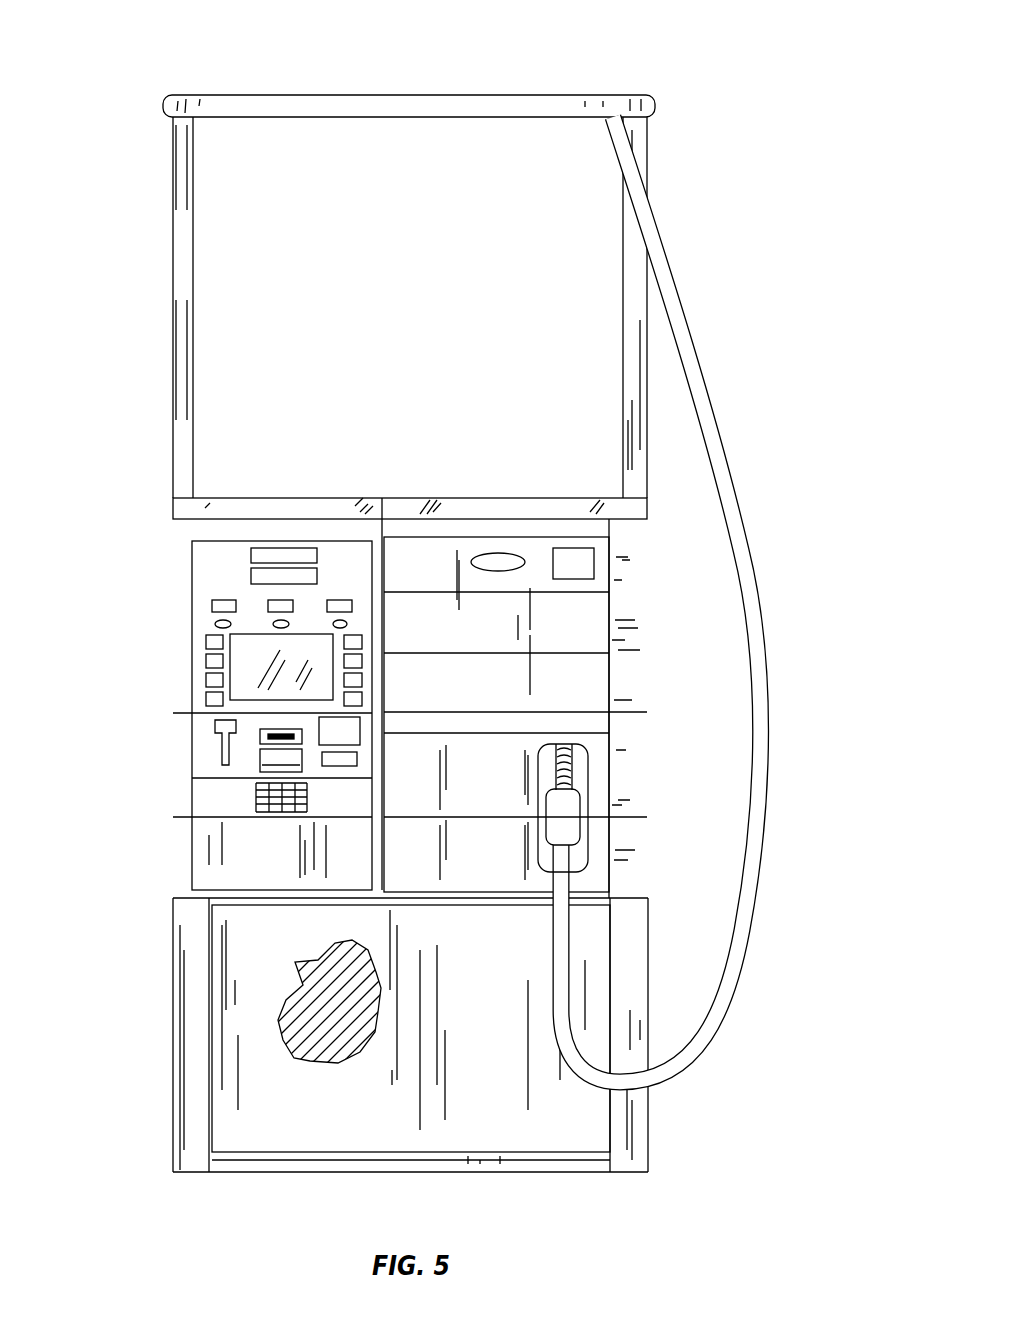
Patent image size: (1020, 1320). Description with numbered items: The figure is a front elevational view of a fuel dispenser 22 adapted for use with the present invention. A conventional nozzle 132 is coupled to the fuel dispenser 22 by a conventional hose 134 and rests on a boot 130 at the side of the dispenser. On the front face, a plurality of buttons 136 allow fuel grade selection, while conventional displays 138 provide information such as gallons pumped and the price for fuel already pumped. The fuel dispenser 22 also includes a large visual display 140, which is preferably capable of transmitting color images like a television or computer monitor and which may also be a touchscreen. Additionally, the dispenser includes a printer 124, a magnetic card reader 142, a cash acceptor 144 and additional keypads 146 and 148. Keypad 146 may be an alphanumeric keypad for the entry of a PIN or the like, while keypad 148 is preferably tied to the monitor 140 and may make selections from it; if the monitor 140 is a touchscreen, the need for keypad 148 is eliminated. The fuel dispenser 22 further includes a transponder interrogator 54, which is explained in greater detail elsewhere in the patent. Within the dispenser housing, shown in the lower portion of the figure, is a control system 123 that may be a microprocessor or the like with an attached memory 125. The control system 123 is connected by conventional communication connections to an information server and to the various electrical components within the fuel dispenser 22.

The fuel dispenser 22 is at (723, 86).
The transponder interrogator 54 is at (595, 566).
The control system 123 is at (372, 987).
The printer 124 is at (355, 725).
The memory 125 is at (331, 1029).
The boot 130 is at (588, 772).
The nozzle 132 is at (584, 818).
The hose 134 is at (769, 674).
The buttons 136 is at (333, 600).
The displays 138 is at (251, 577).
The visual display 140 is at (230, 695).
The magnetic card reader 142 is at (215, 728).
The cash acceptor 144 is at (260, 762).
The keypad 146 is at (258, 797).
The keypad 148 is at (206, 660).